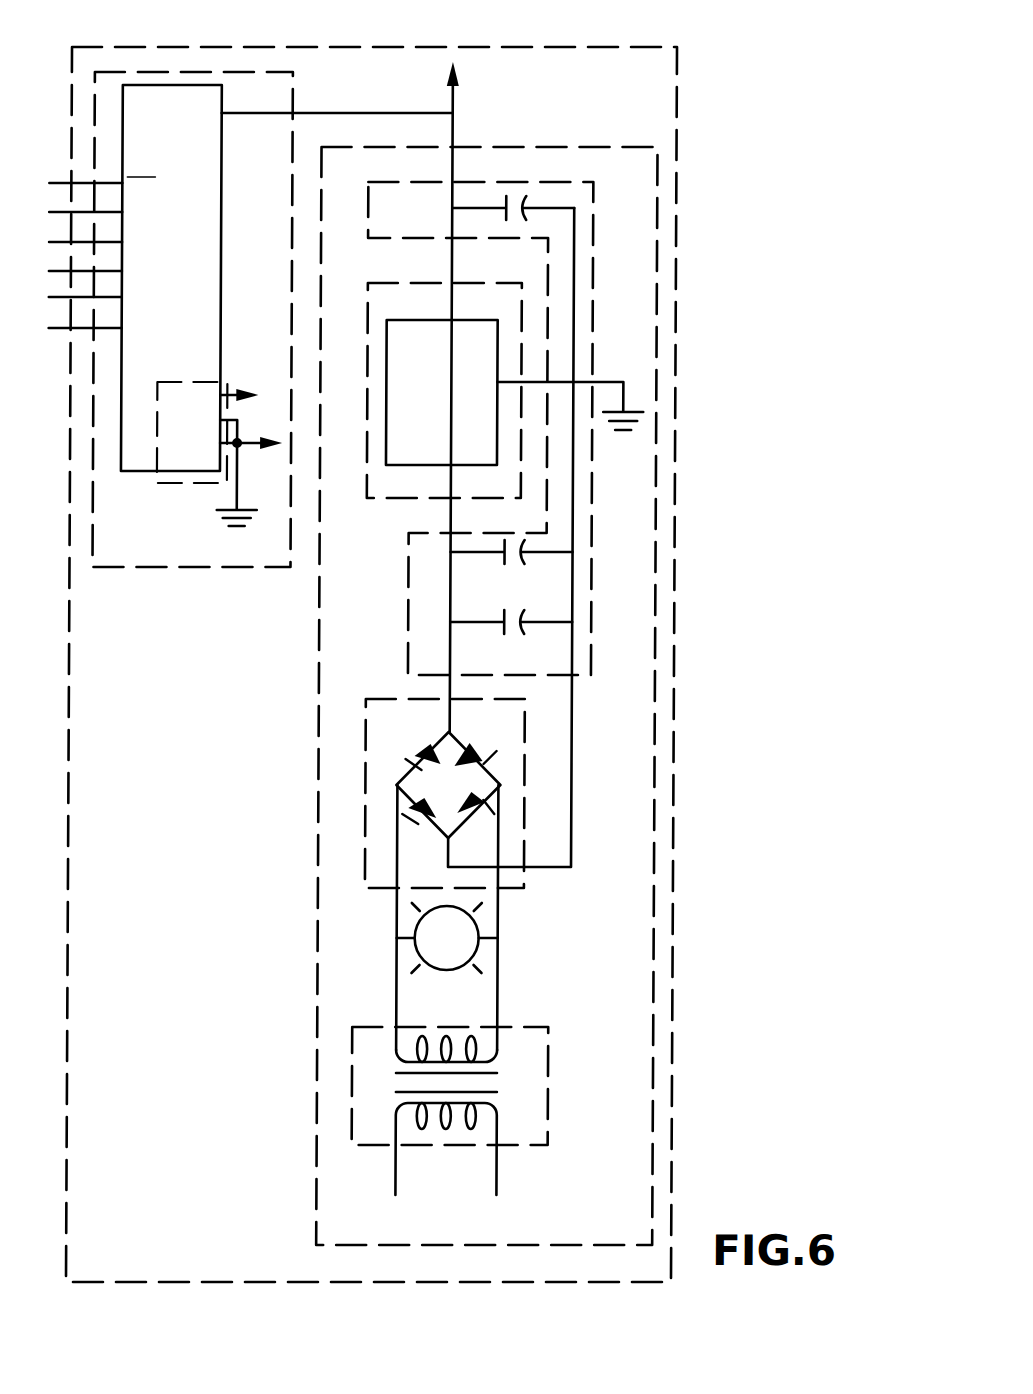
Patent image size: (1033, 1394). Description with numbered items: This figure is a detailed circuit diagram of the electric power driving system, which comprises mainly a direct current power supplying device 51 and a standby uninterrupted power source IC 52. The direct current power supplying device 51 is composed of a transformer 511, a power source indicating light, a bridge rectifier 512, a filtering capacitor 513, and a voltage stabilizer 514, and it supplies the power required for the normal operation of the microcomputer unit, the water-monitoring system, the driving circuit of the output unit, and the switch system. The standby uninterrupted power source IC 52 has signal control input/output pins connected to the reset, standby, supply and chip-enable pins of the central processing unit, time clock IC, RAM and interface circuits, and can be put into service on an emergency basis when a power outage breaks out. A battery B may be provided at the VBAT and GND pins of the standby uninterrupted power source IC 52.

The standby uninterrupted power source IC 52 is at (246, 72).
The direct current power supplying device 51 is at (606, 148).
The transformer 511 is at (553, 1040).
The bridge rectifier 512 is at (528, 745).
The filtering capacitor 513 is at (594, 592).
The voltage stabilizer 514 is at (523, 307).
The battery B is at (160, 483).